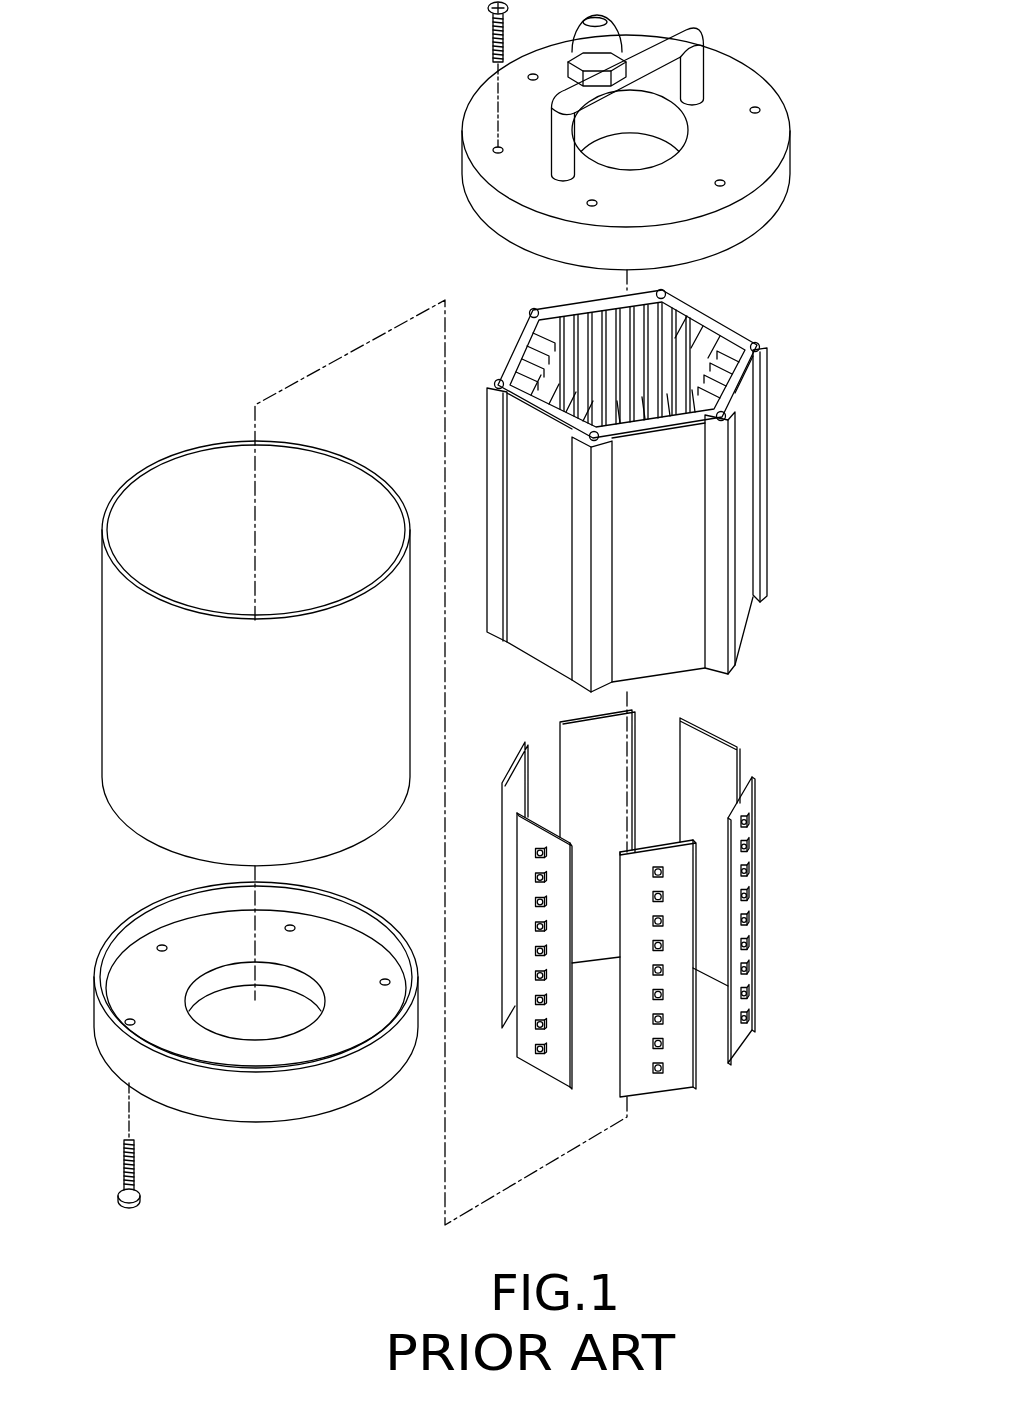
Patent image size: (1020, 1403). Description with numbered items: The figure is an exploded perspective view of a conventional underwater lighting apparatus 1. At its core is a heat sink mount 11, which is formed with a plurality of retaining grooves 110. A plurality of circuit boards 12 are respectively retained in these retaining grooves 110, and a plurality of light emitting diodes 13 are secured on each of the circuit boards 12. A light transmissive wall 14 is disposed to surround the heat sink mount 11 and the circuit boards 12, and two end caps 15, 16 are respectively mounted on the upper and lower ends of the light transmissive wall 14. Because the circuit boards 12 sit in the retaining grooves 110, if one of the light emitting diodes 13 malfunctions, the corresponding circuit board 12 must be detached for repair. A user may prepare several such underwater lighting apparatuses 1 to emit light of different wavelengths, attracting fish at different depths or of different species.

The underwater lighting apparatus 1 is at (246, 305).
The heat sink mount 11 is at (655, 474).
The retaining grooves 110 is at (498, 365).
The circuit boards 12 is at (578, 726).
The light emitting diodes 13 is at (755, 822).
The light transmissive wall 14 is at (115, 617).
The end cap 15 is at (780, 125).
The end cap 16 is at (270, 1113).